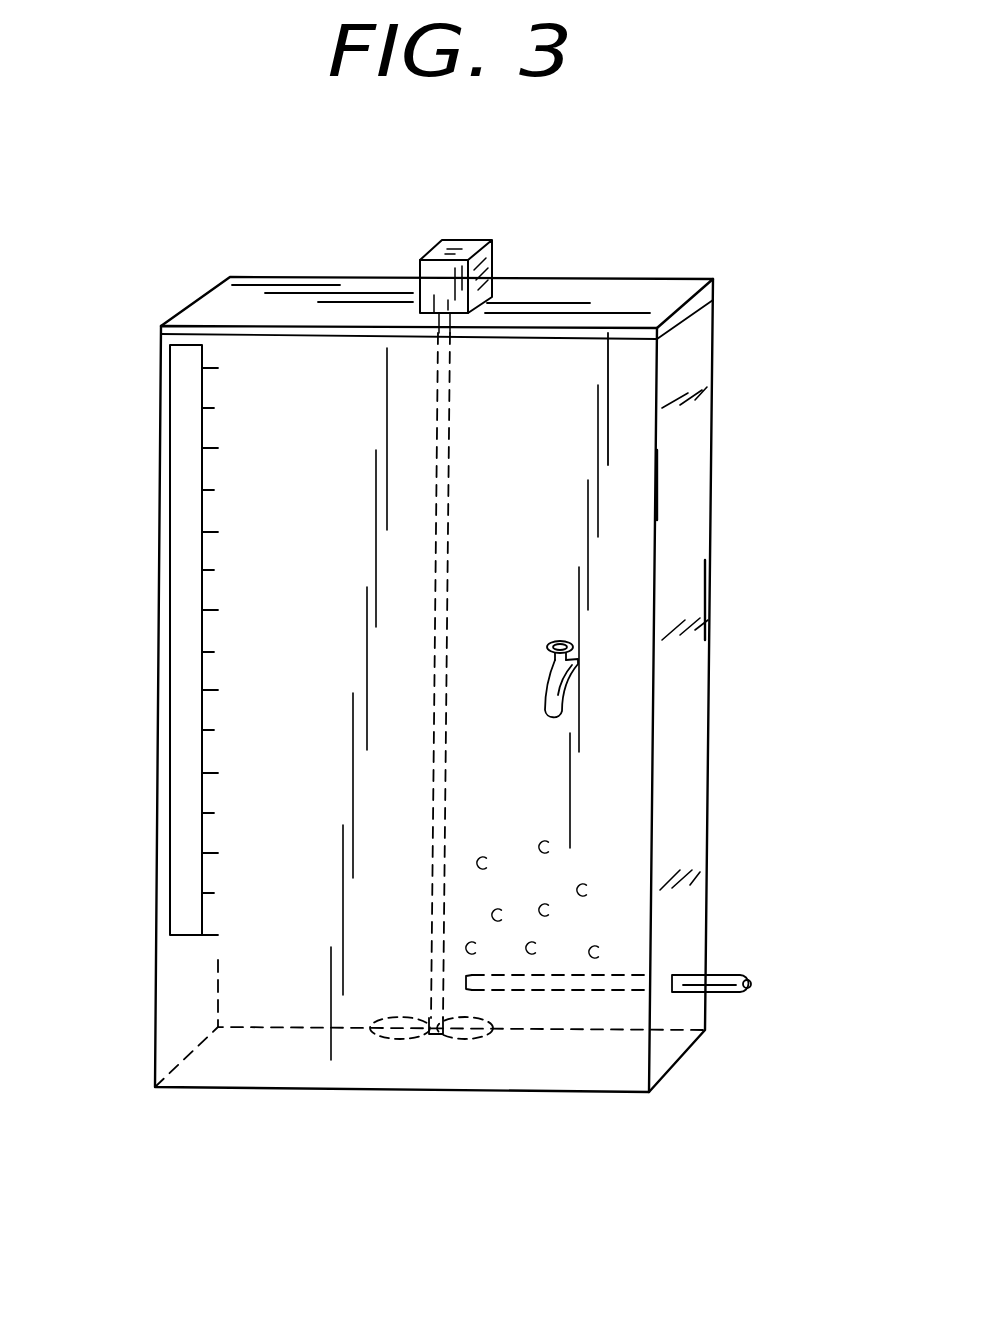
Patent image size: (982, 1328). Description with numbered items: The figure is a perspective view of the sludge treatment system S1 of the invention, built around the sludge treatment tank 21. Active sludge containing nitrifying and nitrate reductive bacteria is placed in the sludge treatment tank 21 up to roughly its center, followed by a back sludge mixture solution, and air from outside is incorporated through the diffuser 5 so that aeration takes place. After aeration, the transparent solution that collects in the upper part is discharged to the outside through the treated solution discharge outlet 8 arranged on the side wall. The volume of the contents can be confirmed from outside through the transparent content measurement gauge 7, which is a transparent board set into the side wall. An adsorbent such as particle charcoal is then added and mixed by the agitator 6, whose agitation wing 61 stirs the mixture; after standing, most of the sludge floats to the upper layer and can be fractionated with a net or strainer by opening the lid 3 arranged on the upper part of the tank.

The lid 3 is at (635, 295).
The diffuser 5 is at (730, 977).
The agitator 6 is at (433, 253).
The agitation wing 61 is at (403, 1043).
The transparent content measurement gauge 7 is at (182, 720).
The treated solution discharge outlet 8 is at (565, 695).
The sludge treatment tank 21 is at (637, 483).
The sludge treatment system S1 is at (738, 605).